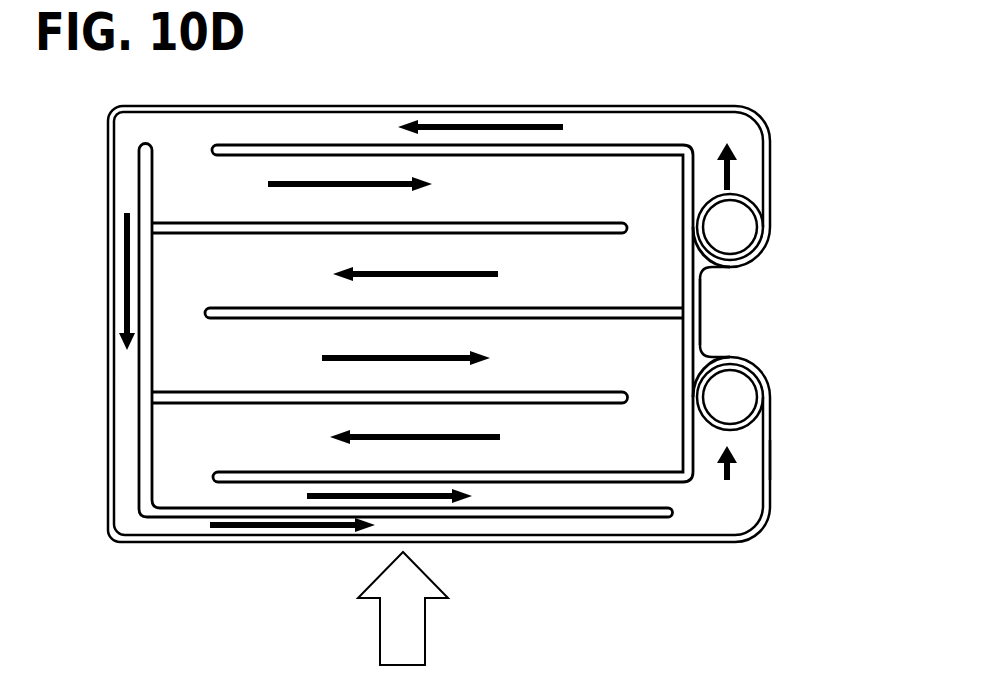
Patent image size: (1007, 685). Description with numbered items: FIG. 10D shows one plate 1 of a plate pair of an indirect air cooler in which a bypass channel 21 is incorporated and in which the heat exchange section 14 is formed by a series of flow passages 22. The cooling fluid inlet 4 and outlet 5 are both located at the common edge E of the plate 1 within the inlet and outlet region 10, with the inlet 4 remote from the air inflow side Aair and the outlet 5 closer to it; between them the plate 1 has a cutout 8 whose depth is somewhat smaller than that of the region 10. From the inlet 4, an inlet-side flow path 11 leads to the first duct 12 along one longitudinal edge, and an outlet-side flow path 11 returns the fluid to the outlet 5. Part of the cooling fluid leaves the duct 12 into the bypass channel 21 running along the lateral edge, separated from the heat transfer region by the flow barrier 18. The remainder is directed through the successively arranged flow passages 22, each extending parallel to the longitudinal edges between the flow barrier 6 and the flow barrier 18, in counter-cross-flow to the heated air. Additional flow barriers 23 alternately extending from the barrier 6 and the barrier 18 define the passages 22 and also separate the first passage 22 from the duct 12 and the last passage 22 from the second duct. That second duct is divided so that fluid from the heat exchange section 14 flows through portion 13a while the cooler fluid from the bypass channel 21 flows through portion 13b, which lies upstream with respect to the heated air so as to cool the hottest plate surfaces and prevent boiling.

The plate 1 is at (473, 80).
The inlet 4 is at (735, 224).
The outlet 5 is at (737, 400).
The flow barrier 6 is at (690, 167).
The cutout 8 is at (732, 317).
The inlet and outlet region 10 is at (768, 93).
The flow path 11 is at (755, 170).
The first duct 12 is at (307, 120).
The first portion of second duct 13a is at (550, 500).
The second portion of second duct 13b is at (520, 528).
The heat exchange section 14 is at (567, 438).
The flow barrier 18 is at (140, 177).
The bypass channel 21 is at (133, 425).
The flow passages 22 is at (411, 284).
The flow barriers 23 is at (545, 223).
The common edge E is at (773, 458).
The air inflow side Aair is at (403, 608).